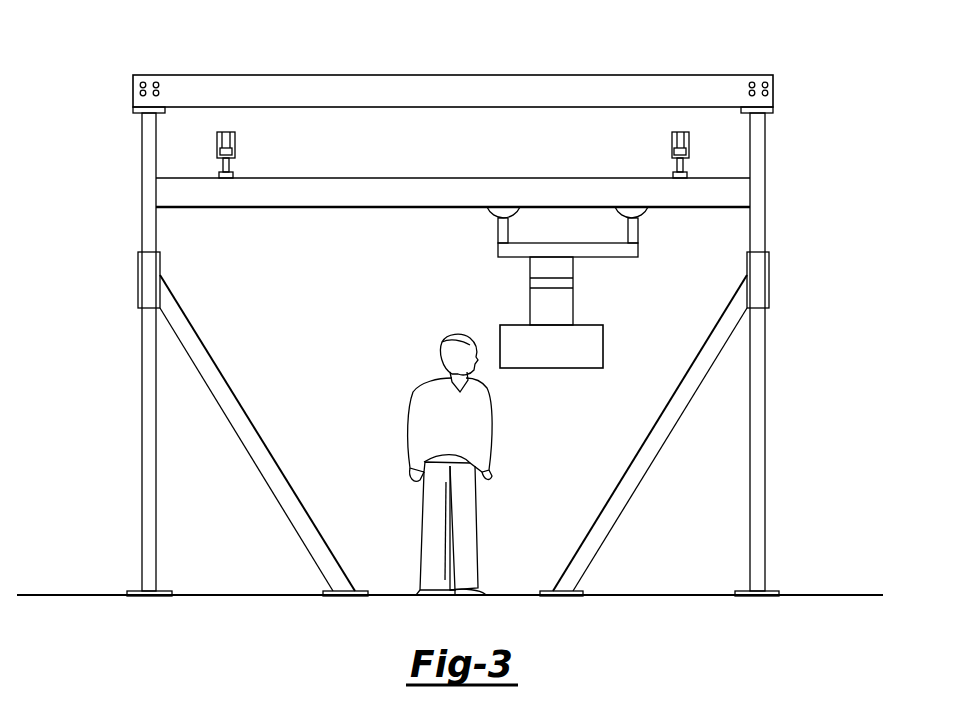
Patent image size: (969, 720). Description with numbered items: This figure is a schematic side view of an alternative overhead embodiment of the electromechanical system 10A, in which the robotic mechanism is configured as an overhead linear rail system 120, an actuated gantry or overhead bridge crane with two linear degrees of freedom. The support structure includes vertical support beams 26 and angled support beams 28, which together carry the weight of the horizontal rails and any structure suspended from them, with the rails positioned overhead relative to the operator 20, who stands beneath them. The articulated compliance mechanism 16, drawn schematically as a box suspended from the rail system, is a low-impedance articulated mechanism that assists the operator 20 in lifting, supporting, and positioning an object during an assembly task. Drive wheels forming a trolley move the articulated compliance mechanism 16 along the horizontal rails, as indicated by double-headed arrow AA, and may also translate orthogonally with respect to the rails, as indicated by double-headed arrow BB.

The electromechanical system 10A is at (844, 84).
The overhead linear rail system 120 is at (202, 46).
The vertical support beams 26 is at (142, 481).
The angled support beams 28 is at (227, 380).
The double-headed arrow AA is at (794, 143).
The double-headed arrow BB is at (605, 156).
The articulated compliance mechanism 16 is at (560, 359).
The operator 20 is at (428, 322).